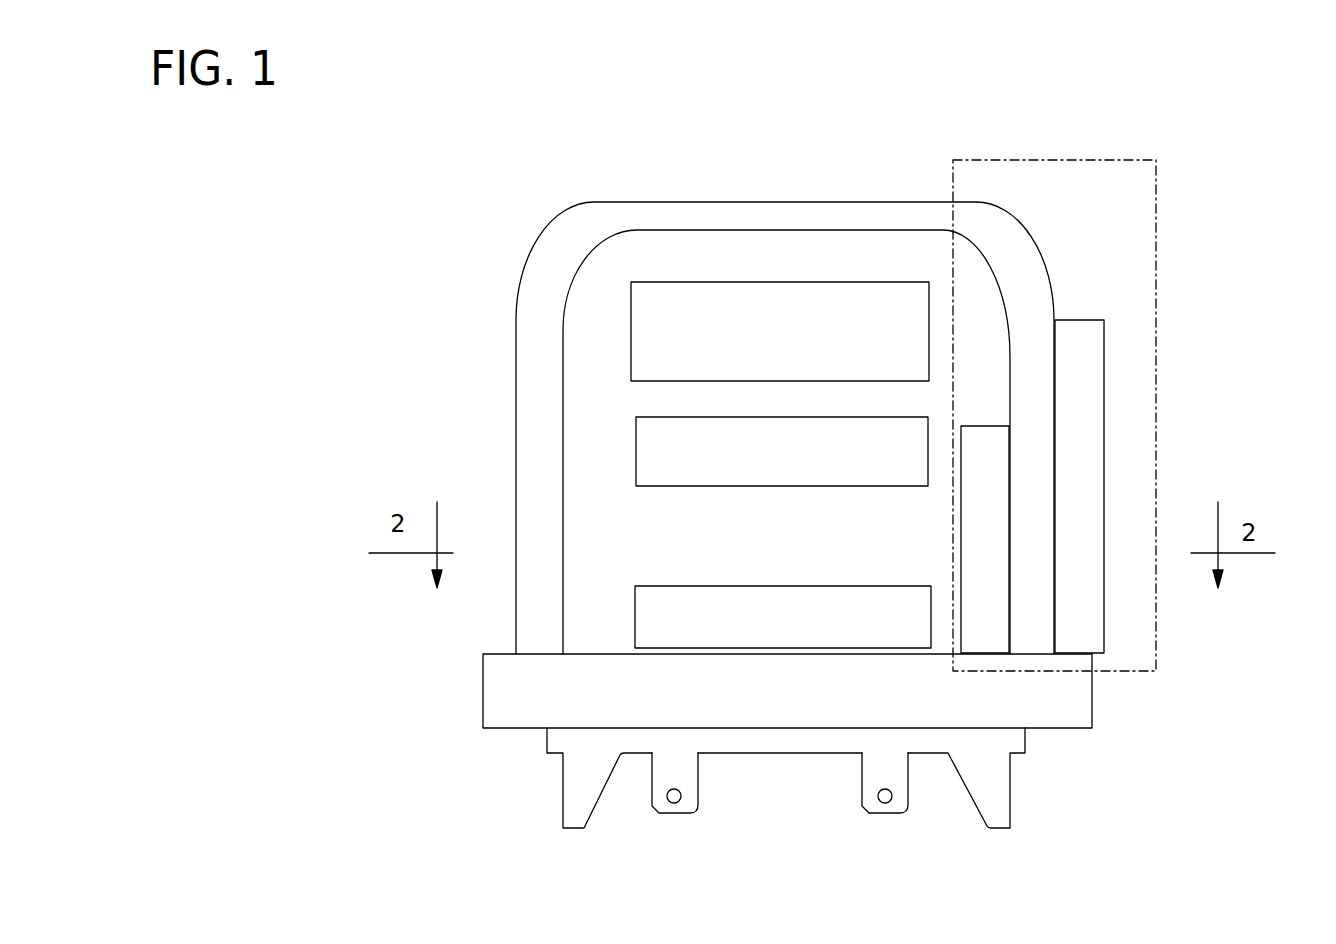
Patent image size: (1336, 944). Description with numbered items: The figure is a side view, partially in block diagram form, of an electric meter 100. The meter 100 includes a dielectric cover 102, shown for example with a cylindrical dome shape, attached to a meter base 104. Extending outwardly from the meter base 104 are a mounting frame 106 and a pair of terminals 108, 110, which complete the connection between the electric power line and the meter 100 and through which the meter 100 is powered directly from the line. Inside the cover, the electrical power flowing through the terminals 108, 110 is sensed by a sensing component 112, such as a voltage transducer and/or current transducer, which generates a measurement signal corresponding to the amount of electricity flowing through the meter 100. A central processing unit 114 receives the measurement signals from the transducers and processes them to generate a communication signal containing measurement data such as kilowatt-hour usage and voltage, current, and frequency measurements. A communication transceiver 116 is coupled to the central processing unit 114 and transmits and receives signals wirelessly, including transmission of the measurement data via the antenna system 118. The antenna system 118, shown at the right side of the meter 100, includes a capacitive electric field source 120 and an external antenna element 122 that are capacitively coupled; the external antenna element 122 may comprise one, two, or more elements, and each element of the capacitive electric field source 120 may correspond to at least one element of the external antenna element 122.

The meter 100 is at (895, 502).
The dielectric cover 102 is at (785, 405).
The meter base 104 is at (824, 714).
The mounting frame 106 is at (832, 783).
The terminal 108 is at (710, 807).
The terminal 110 is at (918, 807).
The sensing component 112 is at (783, 617).
The central processing unit 114 is at (782, 451).
The communication transceiver 116 is at (780, 331).
The antenna system 118 is at (1130, 415).
The capacitive electric field source 120 is at (1034, 427).
The external antenna element 122 is at (1096, 453).